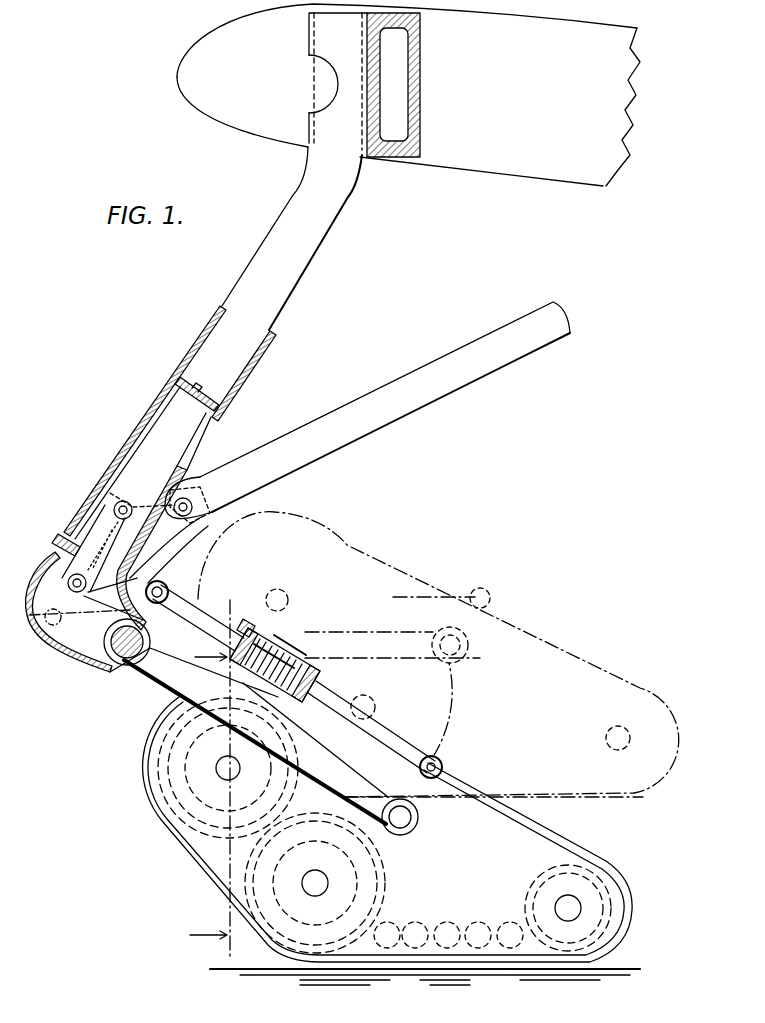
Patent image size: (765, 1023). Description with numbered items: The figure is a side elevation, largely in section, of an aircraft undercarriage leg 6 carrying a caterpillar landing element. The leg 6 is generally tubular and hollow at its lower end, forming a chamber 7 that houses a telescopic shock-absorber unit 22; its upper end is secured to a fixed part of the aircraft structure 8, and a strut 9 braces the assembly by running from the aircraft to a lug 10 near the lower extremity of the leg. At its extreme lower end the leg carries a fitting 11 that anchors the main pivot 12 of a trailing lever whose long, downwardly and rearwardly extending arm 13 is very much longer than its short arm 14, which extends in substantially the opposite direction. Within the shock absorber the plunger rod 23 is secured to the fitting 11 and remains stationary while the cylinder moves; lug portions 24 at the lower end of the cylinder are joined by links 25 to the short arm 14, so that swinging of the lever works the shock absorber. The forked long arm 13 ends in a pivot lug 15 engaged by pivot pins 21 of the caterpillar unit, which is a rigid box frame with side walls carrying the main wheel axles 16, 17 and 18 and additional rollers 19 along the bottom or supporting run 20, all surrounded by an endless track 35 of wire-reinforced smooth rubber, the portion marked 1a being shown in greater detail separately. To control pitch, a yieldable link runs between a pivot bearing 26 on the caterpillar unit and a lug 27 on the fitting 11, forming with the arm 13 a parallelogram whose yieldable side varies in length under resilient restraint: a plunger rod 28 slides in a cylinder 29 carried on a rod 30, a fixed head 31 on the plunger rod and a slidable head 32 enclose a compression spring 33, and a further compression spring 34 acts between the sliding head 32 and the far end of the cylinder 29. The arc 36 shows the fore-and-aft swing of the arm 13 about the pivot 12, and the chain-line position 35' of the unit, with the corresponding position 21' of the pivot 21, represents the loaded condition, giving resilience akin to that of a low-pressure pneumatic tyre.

The section/axis line 1a is at (216, 780).
The undercarriage leg 6 is at (300, 257).
The chamber 7 is at (207, 417).
The fixed part of the aircraft structure 8 is at (383, 137).
The strut 9 is at (437, 385).
The lug 10 is at (193, 478).
The fitting 11 is at (75, 557).
The main pivot 12 is at (123, 655).
The lever arm 13 is at (175, 692).
The short arm 14 is at (93, 620).
The pivot lug 15 is at (418, 817).
The main wheel axle 16 is at (216, 768).
The main wheel axle 17 is at (328, 883).
The main wheel axle 18 is at (556, 906).
The rollers 19 is at (440, 950).
The bottom or supporting run 20 is at (397, 947).
The pivot pins 21 is at (412, 830).
The position of the pivot 21' is at (470, 645).
The telescopic shock-absorber unit 22 is at (163, 413).
The rod 23 is at (107, 490).
The lug portions 24 is at (143, 527).
The links 25 is at (107, 520).
The pivot bearing 26 is at (442, 773).
The lug 27 is at (150, 582).
The plunger rod 28 is at (193, 603).
The cylinder 29 is at (321, 675).
The rod 30 is at (383, 732).
The fixed head 31 is at (323, 637).
The slidable head 32 is at (267, 640).
The spring 33 is at (282, 655).
The compression spring 34 is at (318, 660).
The endless track 35 is at (393, 829).
The position of the caterpillar unit 35' is at (438, 654).
The arc 36 is at (450, 693).